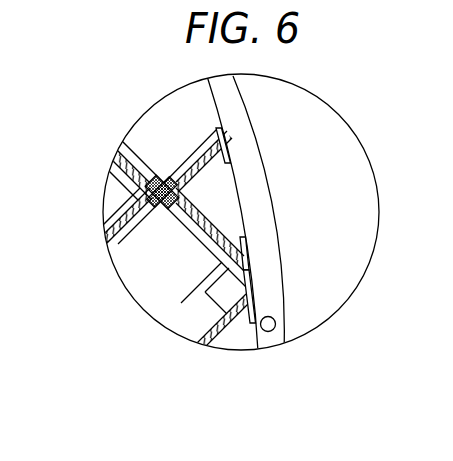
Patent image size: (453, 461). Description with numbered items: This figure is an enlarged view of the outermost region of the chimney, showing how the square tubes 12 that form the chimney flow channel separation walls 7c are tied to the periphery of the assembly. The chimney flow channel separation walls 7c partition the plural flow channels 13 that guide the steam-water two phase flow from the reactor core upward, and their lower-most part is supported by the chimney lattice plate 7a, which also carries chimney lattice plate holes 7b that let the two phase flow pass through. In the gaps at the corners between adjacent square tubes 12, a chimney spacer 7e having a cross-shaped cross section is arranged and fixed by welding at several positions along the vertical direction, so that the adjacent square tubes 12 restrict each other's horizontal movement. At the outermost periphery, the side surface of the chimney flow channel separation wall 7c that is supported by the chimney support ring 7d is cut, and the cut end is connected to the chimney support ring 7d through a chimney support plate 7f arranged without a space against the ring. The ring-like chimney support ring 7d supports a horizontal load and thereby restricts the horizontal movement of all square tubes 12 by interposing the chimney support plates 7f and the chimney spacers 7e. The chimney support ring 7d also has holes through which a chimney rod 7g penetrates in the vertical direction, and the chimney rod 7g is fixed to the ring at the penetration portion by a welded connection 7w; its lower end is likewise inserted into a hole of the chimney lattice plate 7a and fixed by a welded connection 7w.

The chimney lattice plate 7a is at (198, 347).
The chimney lattice plate hole 7b is at (115, 186).
The chimney flow channel separation wall 7c is at (181, 305).
The chimney support ring 7d is at (273, 287).
The chimney spacer 7e is at (161, 205).
The chimney support plate 7f is at (248, 270).
The chimney rod 7g is at (277, 330).
The welded connection 7w is at (268, 332).
The square tube 12 is at (210, 237).
The flow channel 13 is at (152, 276).